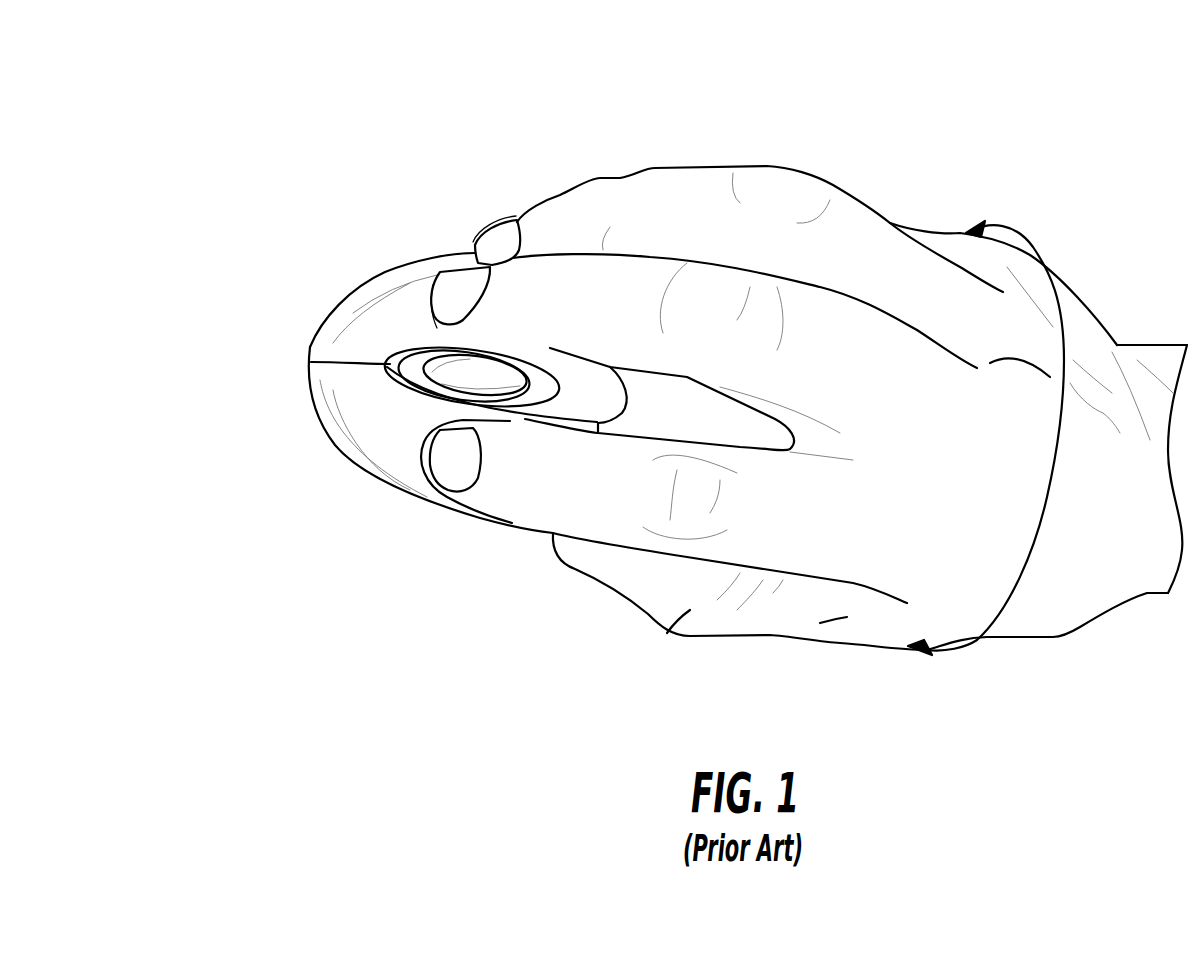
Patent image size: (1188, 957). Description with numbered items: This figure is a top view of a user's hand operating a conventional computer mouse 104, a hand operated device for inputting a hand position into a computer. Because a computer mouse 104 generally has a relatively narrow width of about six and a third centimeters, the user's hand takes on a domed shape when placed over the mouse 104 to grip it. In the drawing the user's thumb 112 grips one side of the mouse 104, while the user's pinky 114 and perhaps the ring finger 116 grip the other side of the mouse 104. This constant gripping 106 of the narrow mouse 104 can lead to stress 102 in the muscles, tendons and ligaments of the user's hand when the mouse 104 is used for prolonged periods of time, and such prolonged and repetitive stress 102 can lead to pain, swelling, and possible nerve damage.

The stress 102 is at (908, 412).
The mouse 104 is at (373, 410).
The constant gripping 106 is at (1100, 480).
The thumb 112 is at (666, 635).
The pinky 114 is at (953, 243).
The ring finger 116 is at (773, 187).